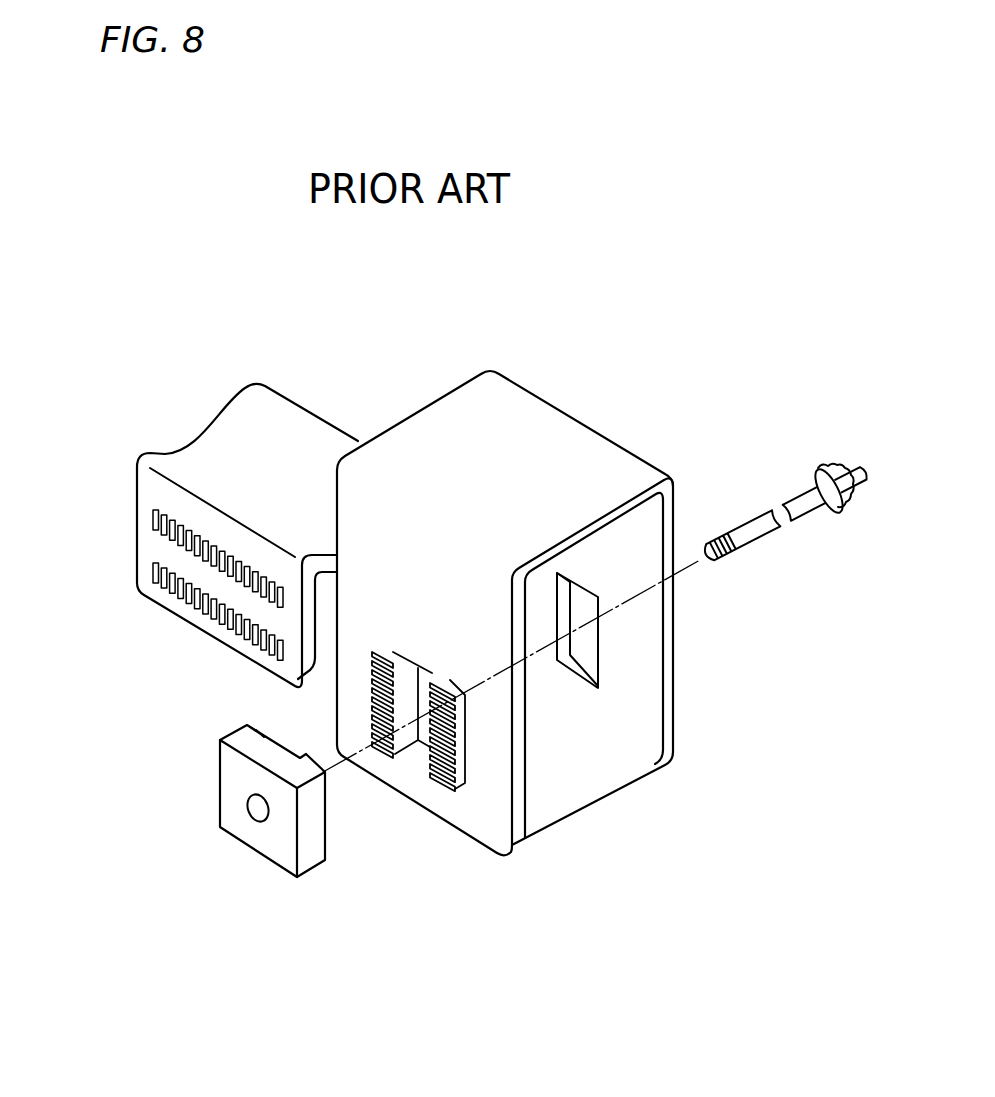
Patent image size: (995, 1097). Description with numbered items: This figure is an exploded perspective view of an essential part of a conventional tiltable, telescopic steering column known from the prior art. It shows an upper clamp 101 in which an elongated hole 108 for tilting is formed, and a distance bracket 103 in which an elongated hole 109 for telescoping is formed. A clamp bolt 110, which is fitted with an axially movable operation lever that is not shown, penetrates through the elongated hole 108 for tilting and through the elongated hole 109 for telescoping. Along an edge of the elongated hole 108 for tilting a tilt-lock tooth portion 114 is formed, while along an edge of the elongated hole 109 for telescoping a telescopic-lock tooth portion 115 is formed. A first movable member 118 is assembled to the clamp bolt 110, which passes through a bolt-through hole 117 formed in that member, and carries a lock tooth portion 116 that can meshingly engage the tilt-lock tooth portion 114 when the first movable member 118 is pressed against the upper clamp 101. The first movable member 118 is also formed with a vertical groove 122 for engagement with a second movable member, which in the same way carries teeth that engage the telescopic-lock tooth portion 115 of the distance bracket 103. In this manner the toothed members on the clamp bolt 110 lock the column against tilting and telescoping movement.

The upper clamp 101 is at (548, 423).
The distance bracket 103 is at (300, 425).
The elongated hole for tilting 108 is at (421, 637).
The elongated hole for telescoping 109 is at (220, 587).
The clamp bolt 110 is at (817, 518).
The tilt-lock tooth portion 114 is at (373, 690).
The telescopic-lock tooth portion 115 is at (153, 580).
The lock tooth portion 116 is at (325, 817).
The bolt-through hole 117 is at (255, 805).
The first movable member 118 is at (260, 840).
The vertical groove 122 is at (258, 732).